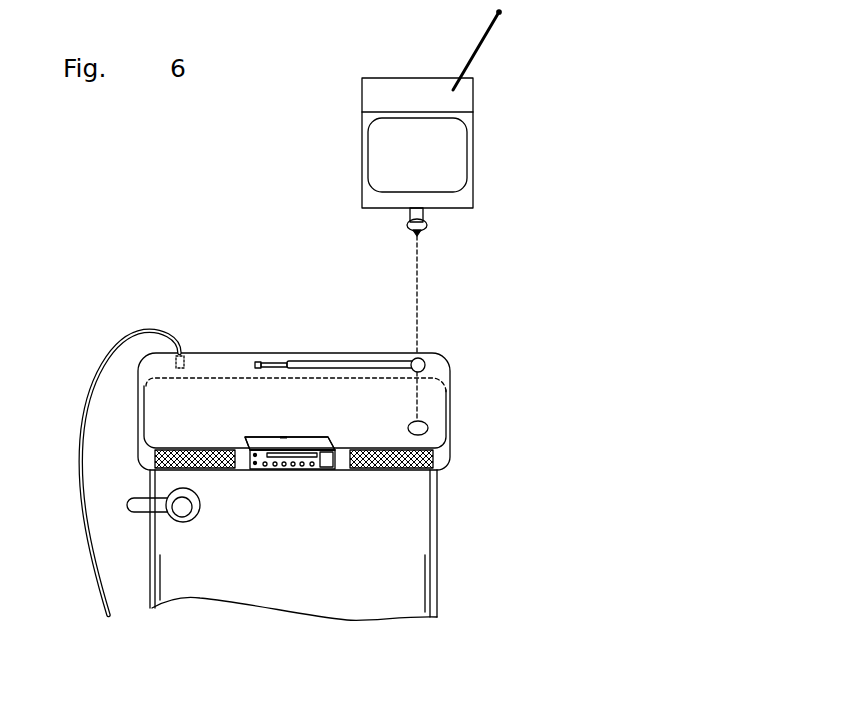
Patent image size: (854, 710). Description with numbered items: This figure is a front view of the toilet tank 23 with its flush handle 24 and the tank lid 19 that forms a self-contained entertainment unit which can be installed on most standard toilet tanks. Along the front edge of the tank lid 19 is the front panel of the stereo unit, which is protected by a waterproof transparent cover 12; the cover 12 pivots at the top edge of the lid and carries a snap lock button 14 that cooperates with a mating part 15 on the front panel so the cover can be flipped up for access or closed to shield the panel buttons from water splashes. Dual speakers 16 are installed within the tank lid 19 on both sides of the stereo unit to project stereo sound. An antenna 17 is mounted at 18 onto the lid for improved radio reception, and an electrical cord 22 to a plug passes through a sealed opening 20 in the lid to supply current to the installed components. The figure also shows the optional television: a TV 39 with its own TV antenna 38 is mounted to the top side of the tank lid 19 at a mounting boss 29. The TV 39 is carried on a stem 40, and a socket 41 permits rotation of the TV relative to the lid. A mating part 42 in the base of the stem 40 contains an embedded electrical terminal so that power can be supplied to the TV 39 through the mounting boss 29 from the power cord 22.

The waterproof transparent cover 12 is at (312, 443).
The snap lock button 14 is at (284, 437).
The mating part 15 is at (293, 470).
The speakers 16 is at (213, 467).
The antenna 17 is at (274, 362).
The antenna mounting 18 is at (423, 359).
The tank lid 19 is at (206, 420).
The sealed opening 20 is at (194, 358).
The electrical cord 22 is at (91, 357).
The tank 23 is at (308, 596).
The flush handle 24 is at (180, 515).
The mounting boss 29 is at (428, 429).
The TV antenna 38 is at (485, 33).
The TV 39 is at (380, 155).
The stem 40 is at (424, 216).
The socket 41 is at (413, 228).
The mating part 42 is at (421, 231).